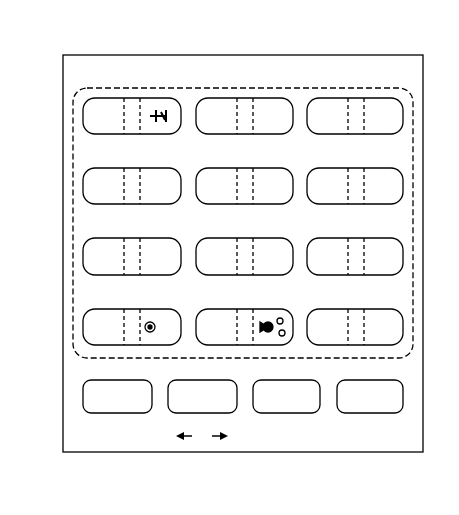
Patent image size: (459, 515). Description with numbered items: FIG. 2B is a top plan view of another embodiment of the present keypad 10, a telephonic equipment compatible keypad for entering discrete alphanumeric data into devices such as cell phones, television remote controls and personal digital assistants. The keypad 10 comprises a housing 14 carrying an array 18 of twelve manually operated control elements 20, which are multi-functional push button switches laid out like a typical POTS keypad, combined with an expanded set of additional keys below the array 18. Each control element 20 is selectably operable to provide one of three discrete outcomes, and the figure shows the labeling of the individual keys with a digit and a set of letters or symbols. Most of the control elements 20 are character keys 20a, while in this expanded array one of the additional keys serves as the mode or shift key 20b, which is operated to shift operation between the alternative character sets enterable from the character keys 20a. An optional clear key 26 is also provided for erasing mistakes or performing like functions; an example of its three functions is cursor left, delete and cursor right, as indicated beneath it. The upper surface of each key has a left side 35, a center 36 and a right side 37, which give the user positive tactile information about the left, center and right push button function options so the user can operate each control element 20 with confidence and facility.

The keypad 10 is at (108, 41).
The housing 14 is at (362, 435).
The array 18 is at (322, 88).
The control element 20 is at (243, 274).
The character key 20a is at (112, 168).
The mode or shift key 20b is at (118, 381).
The clear key 26 is at (210, 381).
The left side 35 is at (96, 246).
The center 36 is at (357, 171).
The right side 37 is at (166, 246).